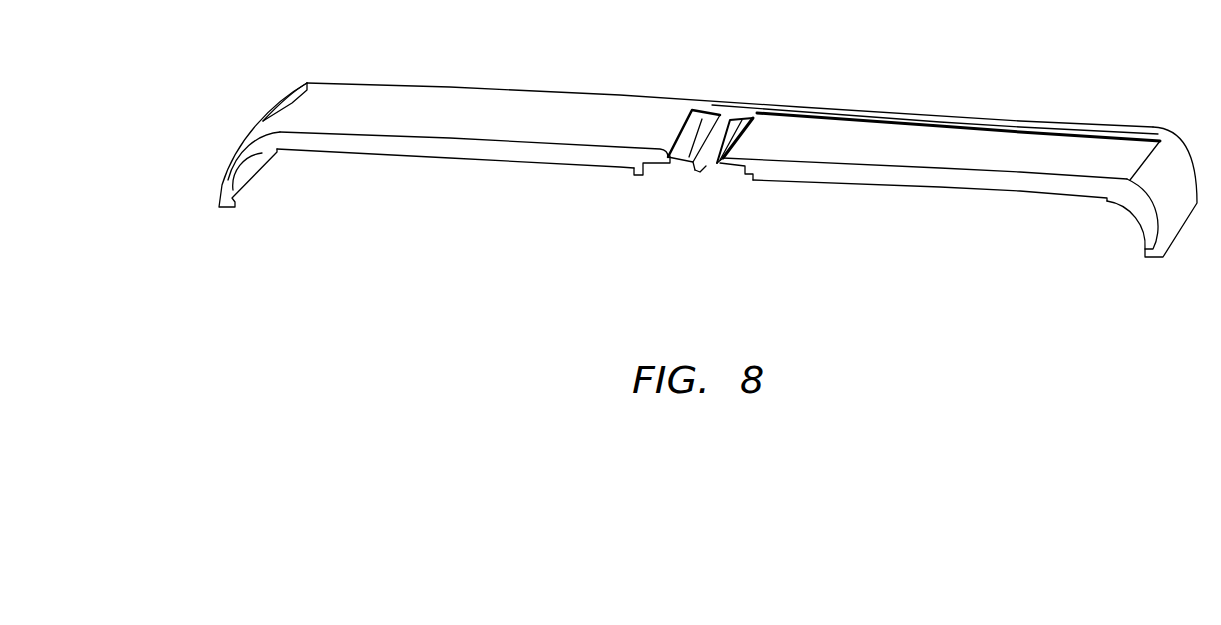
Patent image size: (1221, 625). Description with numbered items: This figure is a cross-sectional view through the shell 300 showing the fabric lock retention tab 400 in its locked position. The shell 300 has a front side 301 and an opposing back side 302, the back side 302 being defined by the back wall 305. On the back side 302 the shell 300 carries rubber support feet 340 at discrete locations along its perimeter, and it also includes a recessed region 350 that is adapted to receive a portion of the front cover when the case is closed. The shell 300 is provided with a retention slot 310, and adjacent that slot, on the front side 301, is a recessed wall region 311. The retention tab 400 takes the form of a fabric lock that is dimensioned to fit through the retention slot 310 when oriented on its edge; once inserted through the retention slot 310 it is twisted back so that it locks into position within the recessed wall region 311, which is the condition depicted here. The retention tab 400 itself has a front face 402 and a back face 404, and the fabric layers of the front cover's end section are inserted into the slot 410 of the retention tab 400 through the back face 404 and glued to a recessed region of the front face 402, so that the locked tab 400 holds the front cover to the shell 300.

The shell 300 is at (962, 192).
The front side 301 is at (365, 155).
The back side 302 is at (412, 95).
The back wall 305 is at (520, 150).
The retention slot 310 is at (692, 178).
The recessed wall region 311 is at (730, 170).
The rubber support feet 340 is at (283, 100).
The recessed region 350 is at (1018, 148).
The retention tab 400 is at (737, 128).
The front face 402 is at (673, 170).
The back face 404 is at (705, 122).
The slot 410 is at (733, 128).